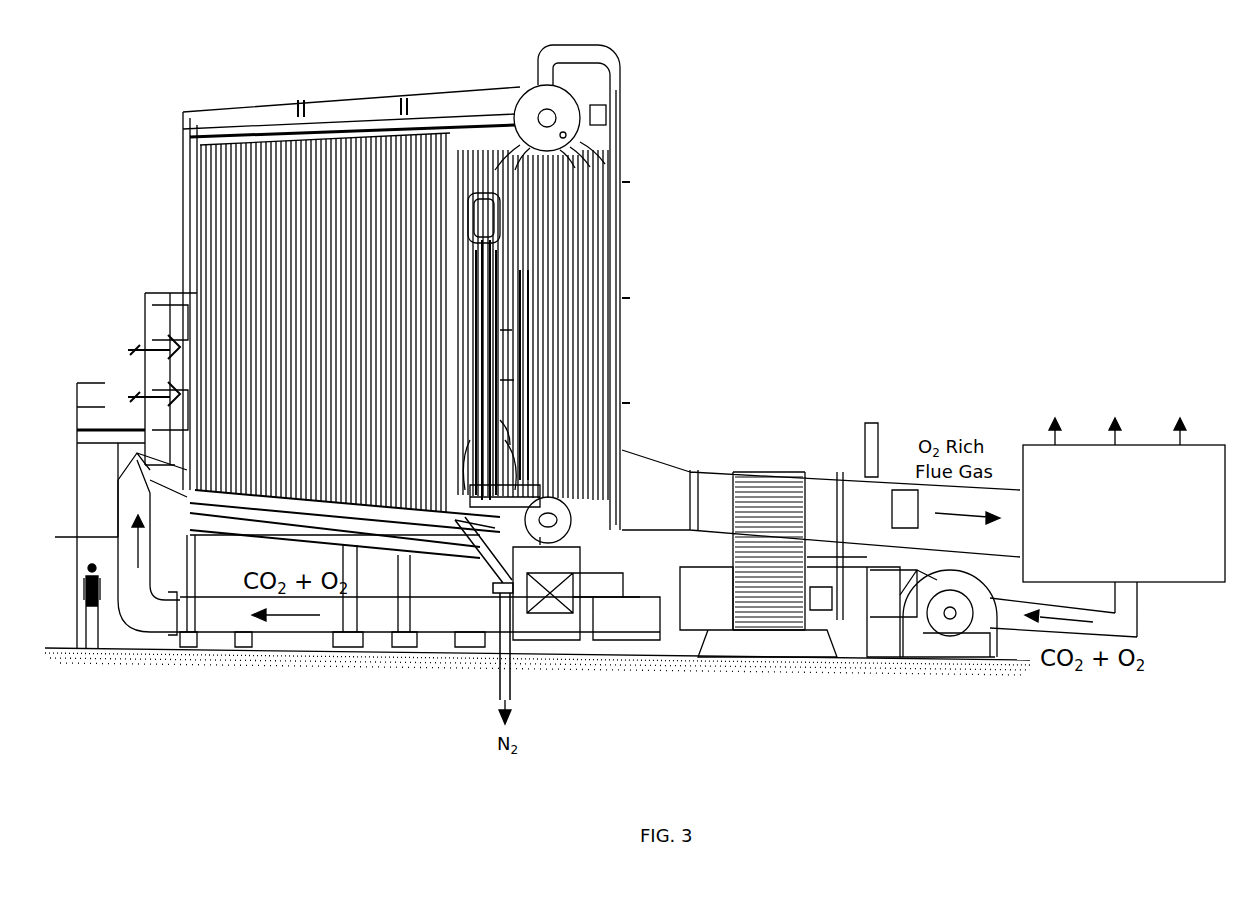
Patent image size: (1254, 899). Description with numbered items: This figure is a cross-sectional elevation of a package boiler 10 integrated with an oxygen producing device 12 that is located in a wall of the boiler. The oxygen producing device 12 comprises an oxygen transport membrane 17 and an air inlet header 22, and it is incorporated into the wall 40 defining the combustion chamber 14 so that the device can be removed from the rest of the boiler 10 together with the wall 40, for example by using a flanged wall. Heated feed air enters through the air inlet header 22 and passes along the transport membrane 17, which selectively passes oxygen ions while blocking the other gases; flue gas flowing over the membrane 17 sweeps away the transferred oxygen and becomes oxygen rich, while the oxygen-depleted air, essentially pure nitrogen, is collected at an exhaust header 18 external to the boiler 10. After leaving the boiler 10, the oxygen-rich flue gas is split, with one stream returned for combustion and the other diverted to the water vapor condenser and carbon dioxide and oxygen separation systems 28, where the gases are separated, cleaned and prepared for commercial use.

The boiler 10 is at (398, 88).
The oxygen producing device 12 is at (527, 272).
The combustion chamber 14 is at (295, 388).
The oxygen transport membrane 17 is at (497, 328).
The exhaust header 18 is at (493, 587).
The air inlet header 22 is at (530, 487).
The water vapor condenser and CO2 and O2 separation systems 28 is at (1113, 552).
The wall 40 is at (293, 177).